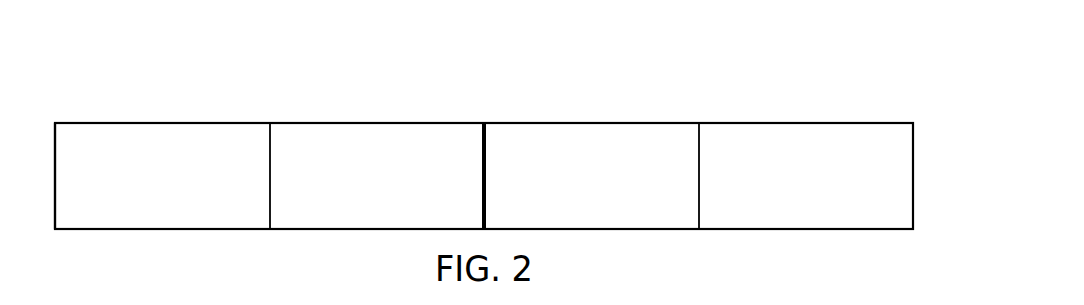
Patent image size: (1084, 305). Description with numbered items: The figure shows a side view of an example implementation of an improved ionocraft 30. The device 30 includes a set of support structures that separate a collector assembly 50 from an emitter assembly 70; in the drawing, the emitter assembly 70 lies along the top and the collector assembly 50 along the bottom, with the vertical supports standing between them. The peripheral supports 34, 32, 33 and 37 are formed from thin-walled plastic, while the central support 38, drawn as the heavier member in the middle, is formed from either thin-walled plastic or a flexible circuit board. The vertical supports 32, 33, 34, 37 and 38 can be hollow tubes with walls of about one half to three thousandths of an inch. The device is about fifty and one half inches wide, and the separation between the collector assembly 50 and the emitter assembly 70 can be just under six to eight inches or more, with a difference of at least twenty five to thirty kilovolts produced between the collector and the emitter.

The improved ionocraft 30 is at (888, 60).
The peripheral support 32 is at (271, 168).
The peripheral support 33 is at (700, 168).
The peripheral support 34 is at (56, 168).
The peripheral support 37 is at (914, 172).
The central support 38 is at (487, 168).
The collector assembly 50 is at (135, 228).
The emitter assembly 70 is at (135, 122).